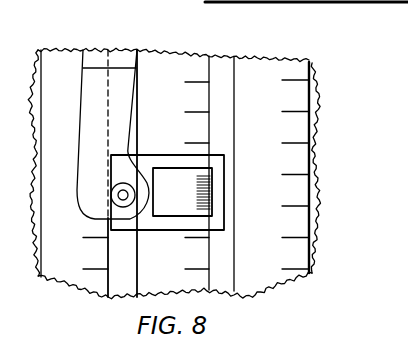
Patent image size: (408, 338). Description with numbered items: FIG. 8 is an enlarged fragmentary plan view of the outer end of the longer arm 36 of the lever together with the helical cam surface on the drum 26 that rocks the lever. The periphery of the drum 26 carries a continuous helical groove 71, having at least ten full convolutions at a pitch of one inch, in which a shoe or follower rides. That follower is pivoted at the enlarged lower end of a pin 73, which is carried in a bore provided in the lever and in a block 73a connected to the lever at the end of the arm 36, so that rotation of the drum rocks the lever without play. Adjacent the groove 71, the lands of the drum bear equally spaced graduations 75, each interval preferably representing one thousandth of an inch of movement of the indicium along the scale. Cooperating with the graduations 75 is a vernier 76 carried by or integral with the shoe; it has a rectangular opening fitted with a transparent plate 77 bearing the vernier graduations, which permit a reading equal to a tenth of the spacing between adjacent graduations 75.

The drum 26 is at (316, 92).
The arm 36 is at (125, 58).
The helical groove 71 is at (223, 60).
The pin 73 is at (125, 196).
The block 73a is at (84, 84).
The graduations 75 is at (284, 174).
The vernier 76 is at (222, 226).
The transparent plate 77 is at (186, 167).